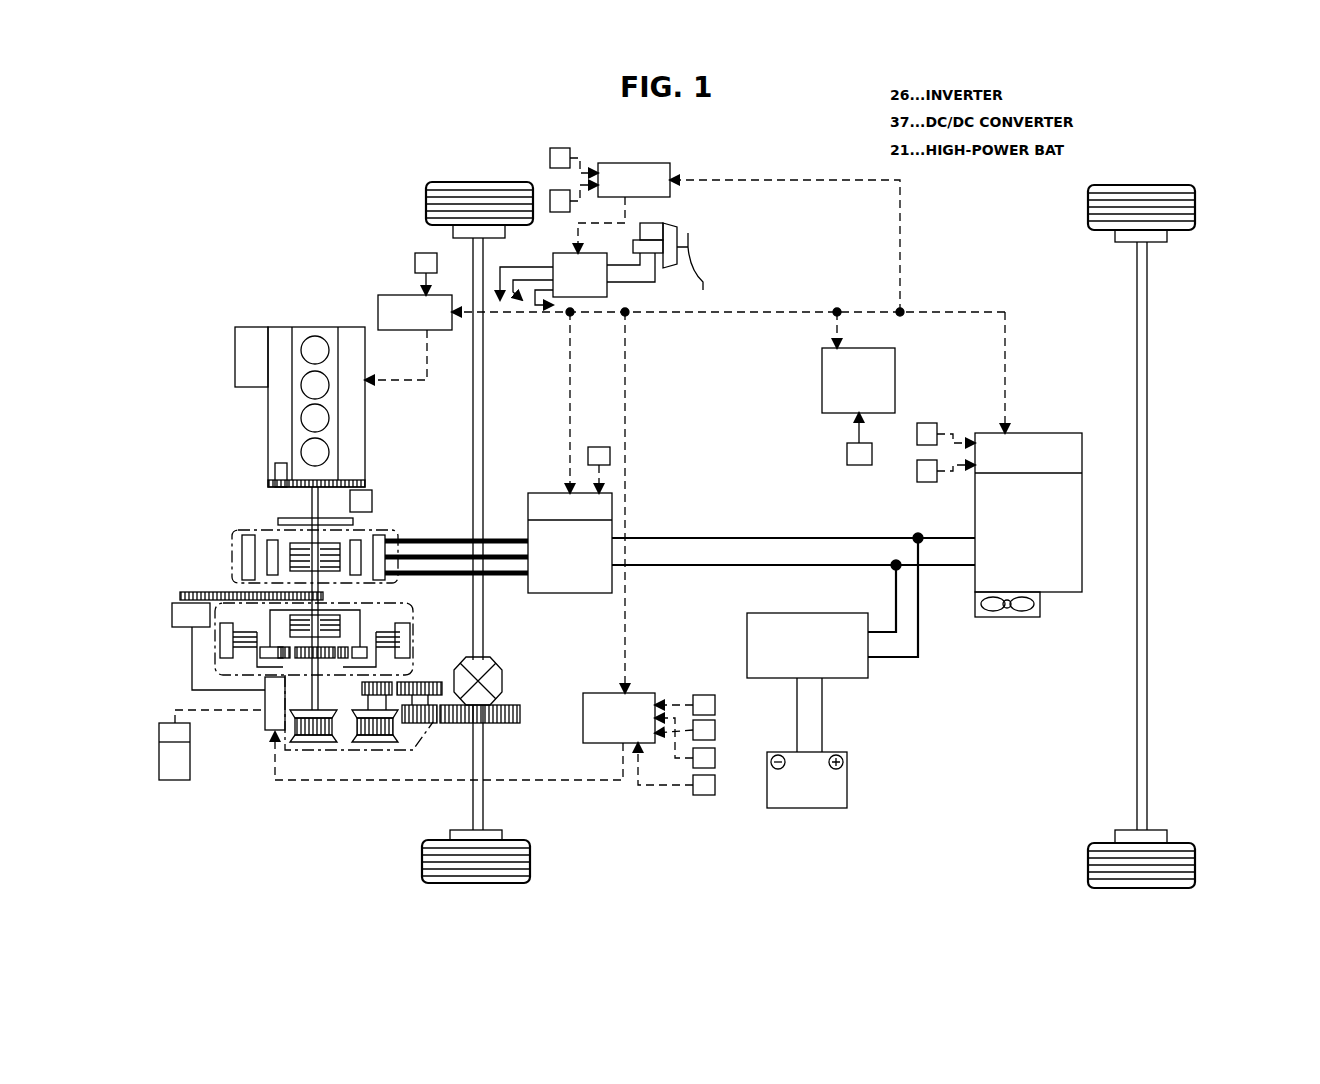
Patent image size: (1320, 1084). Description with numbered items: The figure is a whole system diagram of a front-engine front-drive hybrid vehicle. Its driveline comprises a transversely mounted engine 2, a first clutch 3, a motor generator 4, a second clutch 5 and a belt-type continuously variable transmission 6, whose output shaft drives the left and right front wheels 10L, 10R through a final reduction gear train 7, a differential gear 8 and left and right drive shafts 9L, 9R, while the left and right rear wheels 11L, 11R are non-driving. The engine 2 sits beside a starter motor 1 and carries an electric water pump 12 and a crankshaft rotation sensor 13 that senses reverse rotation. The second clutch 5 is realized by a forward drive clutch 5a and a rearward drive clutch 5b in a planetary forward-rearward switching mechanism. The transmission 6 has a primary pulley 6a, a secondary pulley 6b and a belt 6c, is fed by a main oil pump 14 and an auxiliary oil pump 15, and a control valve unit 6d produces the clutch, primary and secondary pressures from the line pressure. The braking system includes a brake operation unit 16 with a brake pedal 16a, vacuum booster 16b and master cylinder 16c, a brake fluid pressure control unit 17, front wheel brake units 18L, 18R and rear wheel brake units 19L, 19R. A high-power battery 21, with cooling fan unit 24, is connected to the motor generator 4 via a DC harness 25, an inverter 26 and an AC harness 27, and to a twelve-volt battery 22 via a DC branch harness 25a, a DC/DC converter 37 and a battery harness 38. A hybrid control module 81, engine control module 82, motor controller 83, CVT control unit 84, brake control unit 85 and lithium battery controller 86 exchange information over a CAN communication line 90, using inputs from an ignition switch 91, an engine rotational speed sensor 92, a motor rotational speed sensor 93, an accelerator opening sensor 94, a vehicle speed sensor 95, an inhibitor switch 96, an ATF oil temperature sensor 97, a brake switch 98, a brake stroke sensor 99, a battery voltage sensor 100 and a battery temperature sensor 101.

The starter motor 1 is at (365, 500).
The transversely mounted engine 2 is at (332, 335).
The first clutch 3 is at (300, 545).
The motor generator 4 is at (248, 555).
The second clutch 5 is at (226, 665).
The forward drive clutch 5a is at (330, 623).
The rearward drive clutch 5b is at (242, 650).
The belt-type continuously variable transmission 6 is at (320, 755).
The primary pulley 6a is at (325, 742).
The secondary pulley 6b is at (378, 742).
The belt 6c is at (372, 705).
The control valve unit 6d is at (270, 705).
The final reduction gear train 7 is at (420, 716).
The differential gear 8 is at (488, 670).
The right drive shaft 9R is at (485, 345).
The left drive shaft 9L is at (484, 800).
The right front wheel 10R is at (426, 200).
The left front wheel 10L is at (422, 855).
The right rear wheel 11R is at (1195, 205).
The left rear wheel 11L is at (1195, 860).
The electric water pump 12 is at (240, 333).
The crankshaft rotation sensor 13 is at (278, 472).
The main oil pump 14 is at (185, 615).
The auxiliary oil pump 15 is at (176, 758).
The brake operation unit 16 is at (680, 228).
The brake pedal 16a is at (703, 282).
The vacuum booster 16b is at (675, 268).
The master cylinder 16c is at (640, 245).
The brake fluid pressure control unit 17 is at (590, 297).
The right front wheel brake unit 18R is at (468, 240).
The left front wheel brake unit 18L is at (500, 838).
The right rear wheel brake unit 19R is at (1125, 242).
The left rear wheel brake unit 19L is at (1125, 830).
The high-power battery 21 is at (1072, 497).
The 12V-battery 22 is at (778, 797).
The cooling fan unit 24 is at (1010, 606).
The DC harness 25 is at (682, 560).
The DC branch harness 25a is at (920, 630).
The inverter 26 is at (578, 575).
The AC harness 27 is at (455, 540).
The DC/DC converter 37 is at (760, 670).
The battery harness 38 is at (810, 720).
The hybrid control module 81 is at (860, 348).
The engine control module 82 is at (405, 295).
The motor controller 83 is at (535, 495).
The CVT control unit 84 is at (583, 718).
The brake control unit 85 is at (635, 163).
The lithium battery controller 86 is at (1072, 450).
The CAN communication line 90 is at (790, 310).
The ignition switch 91 is at (860, 468).
The engine rotational speed sensor 92 is at (425, 253).
The motor rotational speed sensor 93 is at (600, 447).
The accelerator opening sensor 94 is at (715, 705).
The vehicle speed sensor 95 is at (715, 730).
The inhibitor switch 96 is at (715, 758).
The ATF oil temperature sensor 97 is at (715, 785).
The brake switch 98 is at (550, 158).
The brake stroke sensor 99 is at (560, 212).
The battery voltage sensor 100 is at (925, 423).
The battery temperature sensor 101 is at (925, 482).